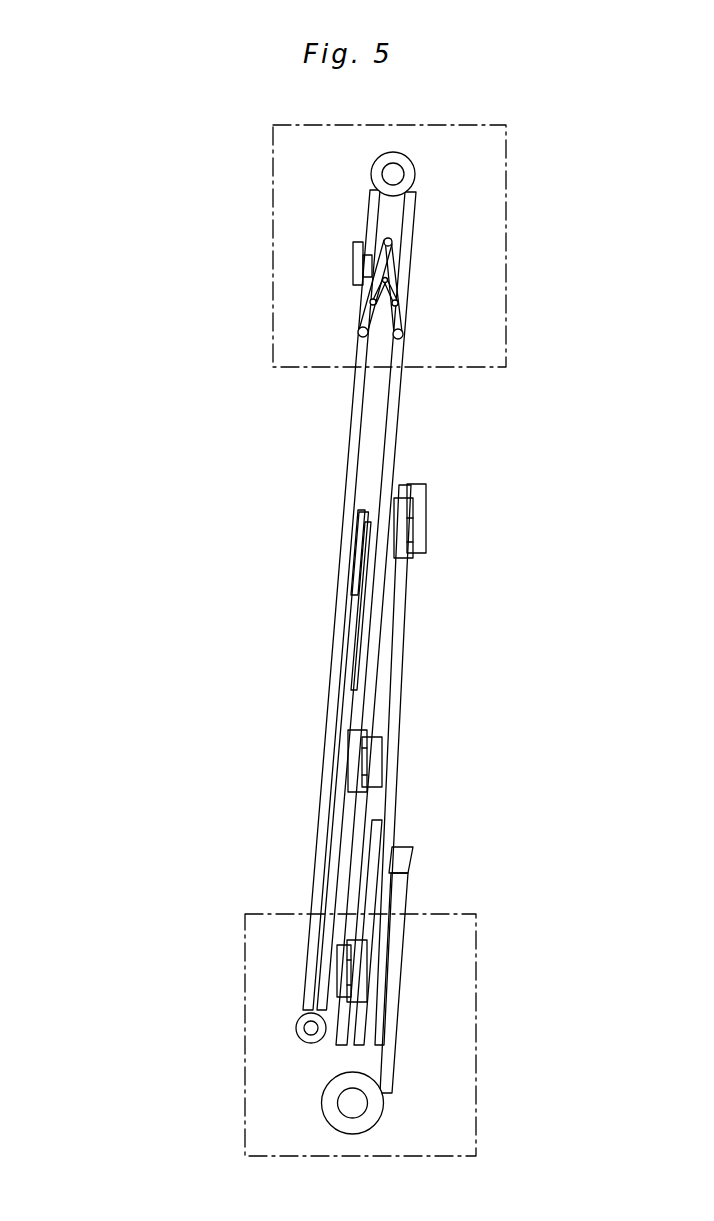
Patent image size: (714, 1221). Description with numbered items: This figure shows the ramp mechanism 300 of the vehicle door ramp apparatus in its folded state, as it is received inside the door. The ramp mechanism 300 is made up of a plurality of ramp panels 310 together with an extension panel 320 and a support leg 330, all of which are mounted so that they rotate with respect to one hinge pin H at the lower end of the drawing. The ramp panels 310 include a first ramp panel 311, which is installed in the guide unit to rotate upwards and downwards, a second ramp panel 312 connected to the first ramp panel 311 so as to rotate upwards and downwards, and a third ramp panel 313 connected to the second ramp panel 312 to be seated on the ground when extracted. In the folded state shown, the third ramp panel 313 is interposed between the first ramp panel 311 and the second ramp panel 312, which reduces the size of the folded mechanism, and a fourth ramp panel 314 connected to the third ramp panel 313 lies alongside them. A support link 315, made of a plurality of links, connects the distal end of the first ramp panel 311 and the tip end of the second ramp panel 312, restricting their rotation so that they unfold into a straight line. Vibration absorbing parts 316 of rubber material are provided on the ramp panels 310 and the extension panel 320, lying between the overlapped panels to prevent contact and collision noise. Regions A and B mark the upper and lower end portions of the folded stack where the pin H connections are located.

The ramp mechanism 300 is at (462, 852).
The ramp panels 310 is at (218, 617).
The first ramp panel 311 is at (383, 597).
The second ramp panel 312 is at (345, 502).
The third ramp panel 313 is at (333, 807).
The fourth ramp panel 314 is at (355, 640).
The support link 315 is at (392, 270).
The vibration absorbing part 316 is at (425, 518).
The extension panel 320 is at (397, 686).
The support leg 330 is at (394, 968).
The hinge pin H is at (395, 175).
The lower region A is at (478, 1099).
The upper region B is at (273, 180).